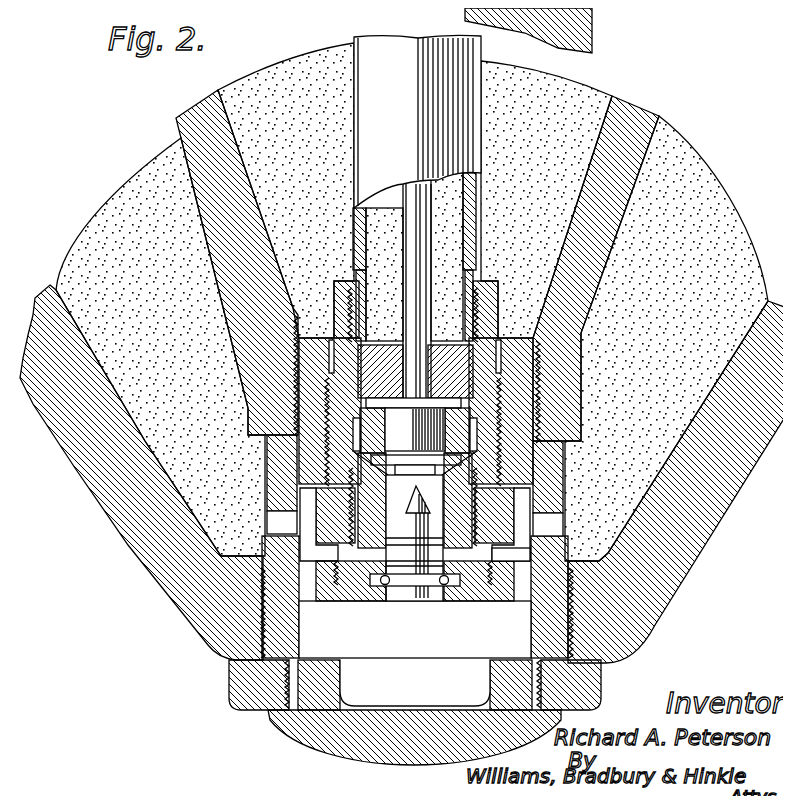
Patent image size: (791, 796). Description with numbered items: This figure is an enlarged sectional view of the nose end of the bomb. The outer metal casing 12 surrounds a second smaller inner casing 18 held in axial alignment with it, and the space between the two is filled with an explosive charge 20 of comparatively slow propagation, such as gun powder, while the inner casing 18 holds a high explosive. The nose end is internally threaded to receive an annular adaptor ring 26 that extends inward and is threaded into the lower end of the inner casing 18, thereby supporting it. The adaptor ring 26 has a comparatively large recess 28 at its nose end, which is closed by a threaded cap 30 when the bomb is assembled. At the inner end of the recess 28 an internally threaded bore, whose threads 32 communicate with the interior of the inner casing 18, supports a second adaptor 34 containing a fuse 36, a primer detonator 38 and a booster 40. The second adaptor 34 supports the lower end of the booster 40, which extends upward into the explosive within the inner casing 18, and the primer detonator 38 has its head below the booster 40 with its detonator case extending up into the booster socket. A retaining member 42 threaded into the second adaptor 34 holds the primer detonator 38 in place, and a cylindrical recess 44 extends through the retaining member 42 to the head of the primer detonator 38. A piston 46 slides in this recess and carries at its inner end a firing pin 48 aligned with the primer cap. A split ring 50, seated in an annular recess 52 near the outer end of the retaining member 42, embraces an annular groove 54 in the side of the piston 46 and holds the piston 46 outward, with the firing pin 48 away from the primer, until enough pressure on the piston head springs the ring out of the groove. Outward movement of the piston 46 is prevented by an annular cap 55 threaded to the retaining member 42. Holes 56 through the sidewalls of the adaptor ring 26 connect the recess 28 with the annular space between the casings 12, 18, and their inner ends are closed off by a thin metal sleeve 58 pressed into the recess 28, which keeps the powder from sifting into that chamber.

The metal casing 12 is at (720, 474).
The inner casing 18 is at (588, 253).
The explosive charge 20 is at (117, 218).
The adaptor ring 26 is at (548, 610).
The recess 28 is at (340, 628).
The threaded cap 30 is at (333, 724).
The threads 32 is at (493, 434).
The second adaptor 34 is at (326, 413).
The fuse 36 is at (393, 608).
The primer detonator 38 is at (415, 441).
The booster 40 is at (448, 259).
The retaining member 42 is at (354, 501).
The cylindrical recess 44 is at (355, 488).
The piston 46 is at (424, 575).
The firing pin 48 is at (516, 488).
The split ring 50 is at (366, 594).
The annular recess 52 is at (458, 578).
The annular groove 54 is at (416, 578).
The annular cap 55 is at (502, 594).
The holes 56 is at (546, 514).
The thin metal sleeve 58 is at (528, 543).